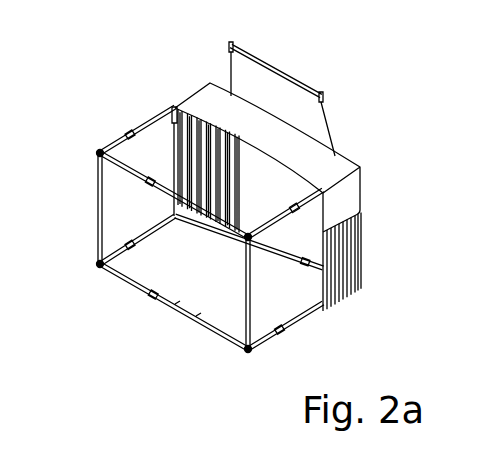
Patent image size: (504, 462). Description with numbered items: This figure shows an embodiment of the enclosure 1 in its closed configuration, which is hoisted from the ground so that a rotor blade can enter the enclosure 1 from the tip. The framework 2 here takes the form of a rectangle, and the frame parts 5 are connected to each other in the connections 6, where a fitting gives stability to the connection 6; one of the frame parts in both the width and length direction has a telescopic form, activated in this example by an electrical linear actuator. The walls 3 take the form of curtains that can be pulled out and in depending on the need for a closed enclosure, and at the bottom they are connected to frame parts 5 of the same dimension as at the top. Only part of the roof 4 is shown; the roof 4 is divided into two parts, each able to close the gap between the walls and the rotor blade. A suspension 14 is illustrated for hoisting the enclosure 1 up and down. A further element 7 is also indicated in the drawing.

The enclosure 1 is at (372, 114).
The framework 2 is at (110, 130).
The walls 3 is at (362, 248).
The roof 4 is at (360, 167).
The frame parts 5 is at (193, 92).
The connections 6 is at (98, 152).
The clamp sleeve 7 is at (296, 206).
The suspension 14 is at (260, 62).